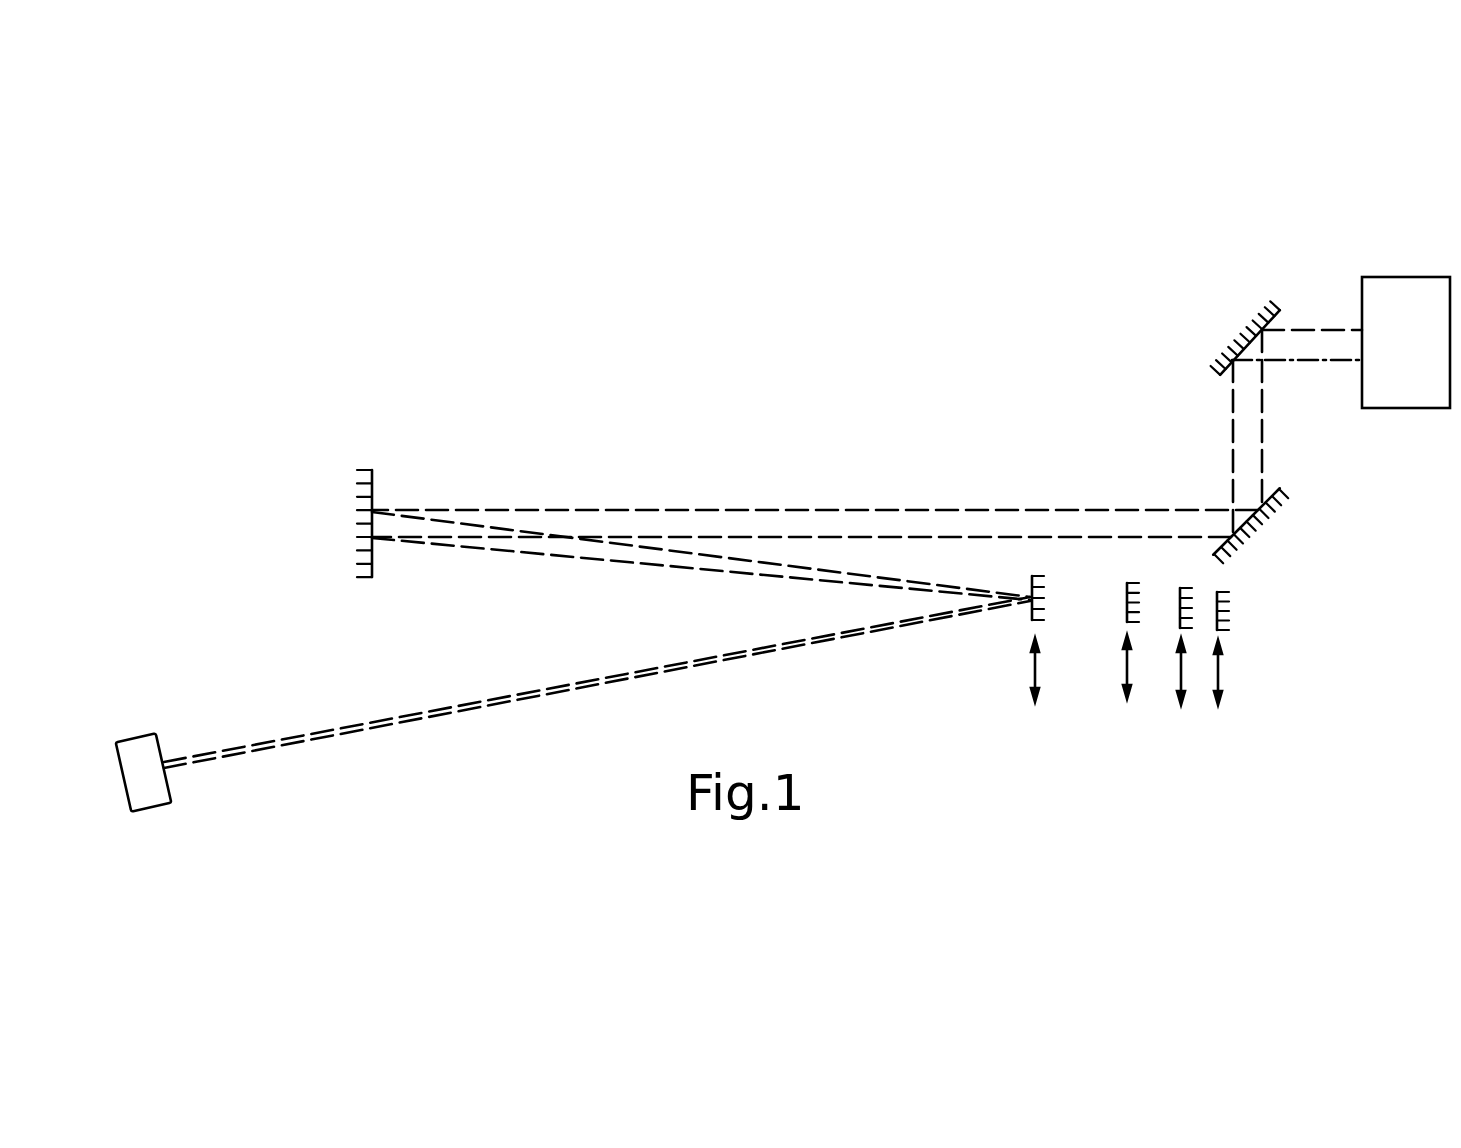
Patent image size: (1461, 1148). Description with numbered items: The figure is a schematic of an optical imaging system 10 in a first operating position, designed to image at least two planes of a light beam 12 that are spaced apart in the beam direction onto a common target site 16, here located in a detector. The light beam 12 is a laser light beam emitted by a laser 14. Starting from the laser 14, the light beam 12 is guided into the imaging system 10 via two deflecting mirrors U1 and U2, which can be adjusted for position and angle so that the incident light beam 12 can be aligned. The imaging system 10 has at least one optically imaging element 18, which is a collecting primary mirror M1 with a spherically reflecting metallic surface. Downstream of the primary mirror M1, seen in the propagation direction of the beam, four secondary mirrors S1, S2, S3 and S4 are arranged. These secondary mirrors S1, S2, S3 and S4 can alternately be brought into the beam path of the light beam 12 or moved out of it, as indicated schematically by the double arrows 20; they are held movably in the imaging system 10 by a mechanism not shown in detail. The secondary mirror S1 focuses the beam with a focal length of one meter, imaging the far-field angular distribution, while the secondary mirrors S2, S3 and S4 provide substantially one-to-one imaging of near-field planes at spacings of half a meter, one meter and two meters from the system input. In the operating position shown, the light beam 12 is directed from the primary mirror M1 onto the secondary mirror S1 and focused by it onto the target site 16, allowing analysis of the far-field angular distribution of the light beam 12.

The optical imaging system 10 is at (762, 352).
The light beam 12 is at (1312, 350).
The laser 14 is at (1412, 277).
The target site 16 is at (160, 743).
The optically imaging element 18 is at (299, 470).
The double arrows 20 is at (1032, 672).
The primary mirror M1 is at (373, 487).
The deflecting mirror U1 is at (1276, 318).
The deflecting mirror U2 is at (1267, 492).
The secondary mirror S1 is at (1030, 607).
The secondary mirror S2 is at (1127, 600).
The secondary mirror S3 is at (1180, 607).
The secondary mirror S4 is at (1227, 610).